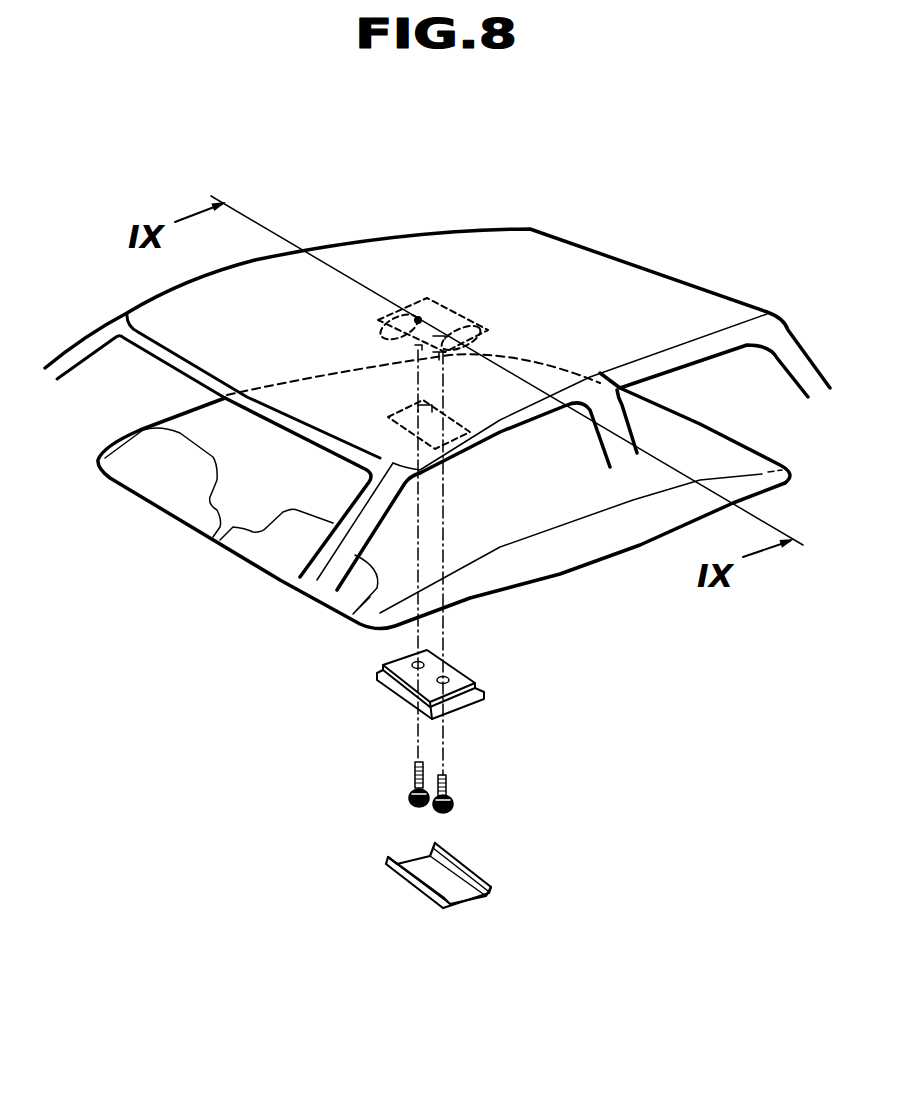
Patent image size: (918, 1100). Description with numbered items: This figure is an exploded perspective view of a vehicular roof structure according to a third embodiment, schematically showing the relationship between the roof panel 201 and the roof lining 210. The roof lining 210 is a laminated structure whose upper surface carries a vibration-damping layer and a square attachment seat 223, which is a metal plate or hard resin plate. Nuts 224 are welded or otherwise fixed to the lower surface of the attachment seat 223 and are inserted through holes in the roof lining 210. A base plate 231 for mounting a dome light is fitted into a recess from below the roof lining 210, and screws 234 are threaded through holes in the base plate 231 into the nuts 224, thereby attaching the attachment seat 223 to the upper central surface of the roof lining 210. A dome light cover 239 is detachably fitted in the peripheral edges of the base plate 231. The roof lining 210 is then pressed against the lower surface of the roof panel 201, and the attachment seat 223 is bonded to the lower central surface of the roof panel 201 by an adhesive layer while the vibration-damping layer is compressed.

The roof panel 201 is at (474, 244).
The roof lining 210 is at (618, 575).
The attachment seat 223 is at (457, 317).
The nuts 224 is at (475, 330).
The base plate 231 is at (400, 700).
The screws 234 is at (413, 773).
The dome light cover 239 is at (470, 903).